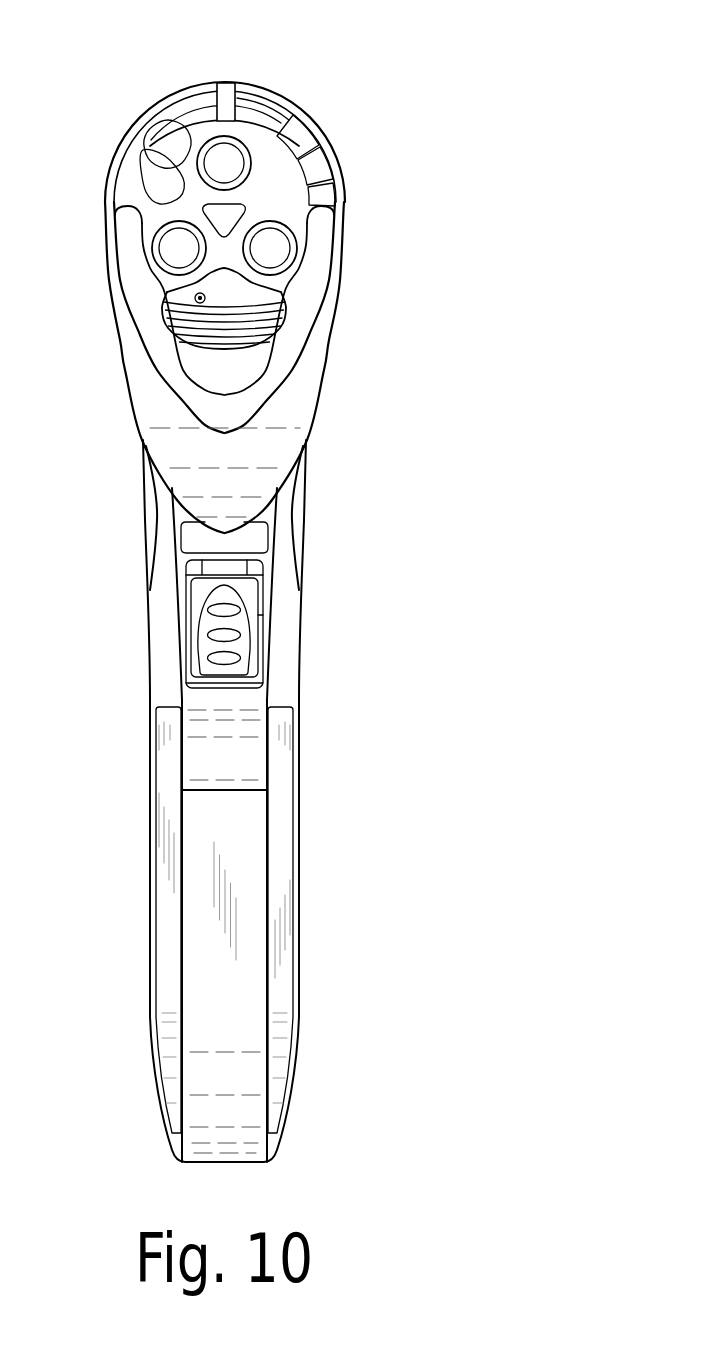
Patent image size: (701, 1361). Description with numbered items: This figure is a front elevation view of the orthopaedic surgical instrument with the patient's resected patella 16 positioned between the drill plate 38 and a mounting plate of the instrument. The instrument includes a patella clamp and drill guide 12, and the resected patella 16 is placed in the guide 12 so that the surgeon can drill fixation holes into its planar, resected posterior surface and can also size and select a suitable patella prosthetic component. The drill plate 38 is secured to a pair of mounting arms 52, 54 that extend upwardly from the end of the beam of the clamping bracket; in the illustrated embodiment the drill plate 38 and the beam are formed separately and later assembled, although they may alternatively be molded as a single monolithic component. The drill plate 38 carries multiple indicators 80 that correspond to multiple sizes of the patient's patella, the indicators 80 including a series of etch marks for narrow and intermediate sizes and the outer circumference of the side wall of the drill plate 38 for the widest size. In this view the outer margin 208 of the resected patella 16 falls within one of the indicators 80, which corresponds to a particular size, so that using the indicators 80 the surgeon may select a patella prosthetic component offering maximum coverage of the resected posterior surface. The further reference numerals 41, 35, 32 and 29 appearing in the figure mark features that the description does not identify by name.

The patella clamp and drill guide 12 is at (368, 655).
The indicators 80 is at (360, 130).
The outer margin 208 is at (158, 102).
The drill plate 38 is at (236, 82).
The resected patella 16 is at (278, 101).
The ring segment 41 is at (298, 136).
The face plate segment 35 is at (167, 144).
The face plate segment 32 is at (158, 176).
The trimmer 29 is at (224, 308).
The mounting arm 54 is at (140, 372).
The mounting arm 52 is at (314, 361).